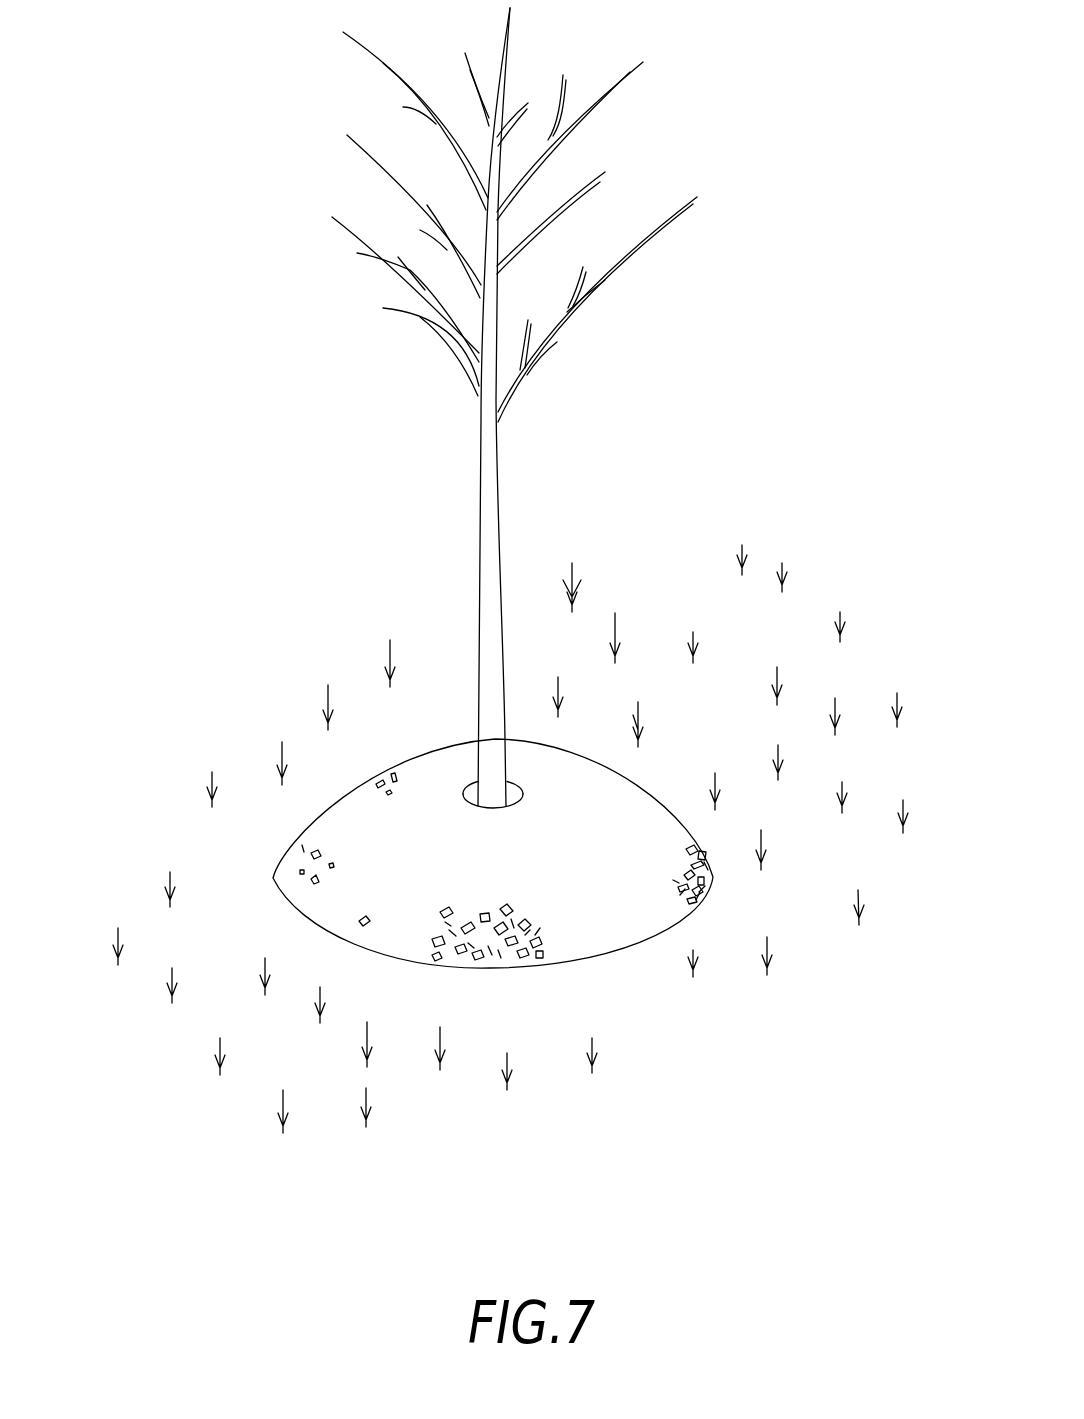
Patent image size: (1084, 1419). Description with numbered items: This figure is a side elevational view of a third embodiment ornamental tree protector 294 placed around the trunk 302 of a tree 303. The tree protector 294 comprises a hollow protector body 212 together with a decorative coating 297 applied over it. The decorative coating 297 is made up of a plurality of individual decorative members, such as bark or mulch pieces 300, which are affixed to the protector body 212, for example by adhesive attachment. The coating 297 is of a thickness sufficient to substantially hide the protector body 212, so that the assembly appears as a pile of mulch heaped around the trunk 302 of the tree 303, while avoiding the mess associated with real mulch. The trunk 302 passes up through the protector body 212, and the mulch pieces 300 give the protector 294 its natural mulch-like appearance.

The tree 303 is at (541, 407).
The trunk 302 is at (485, 600).
The ornamental tree protector 294 is at (472, 858).
The decorative coating 297 is at (285, 849).
The hollow protector body 212 is at (414, 790).
The bark or mulch pieces 300 is at (522, 968).